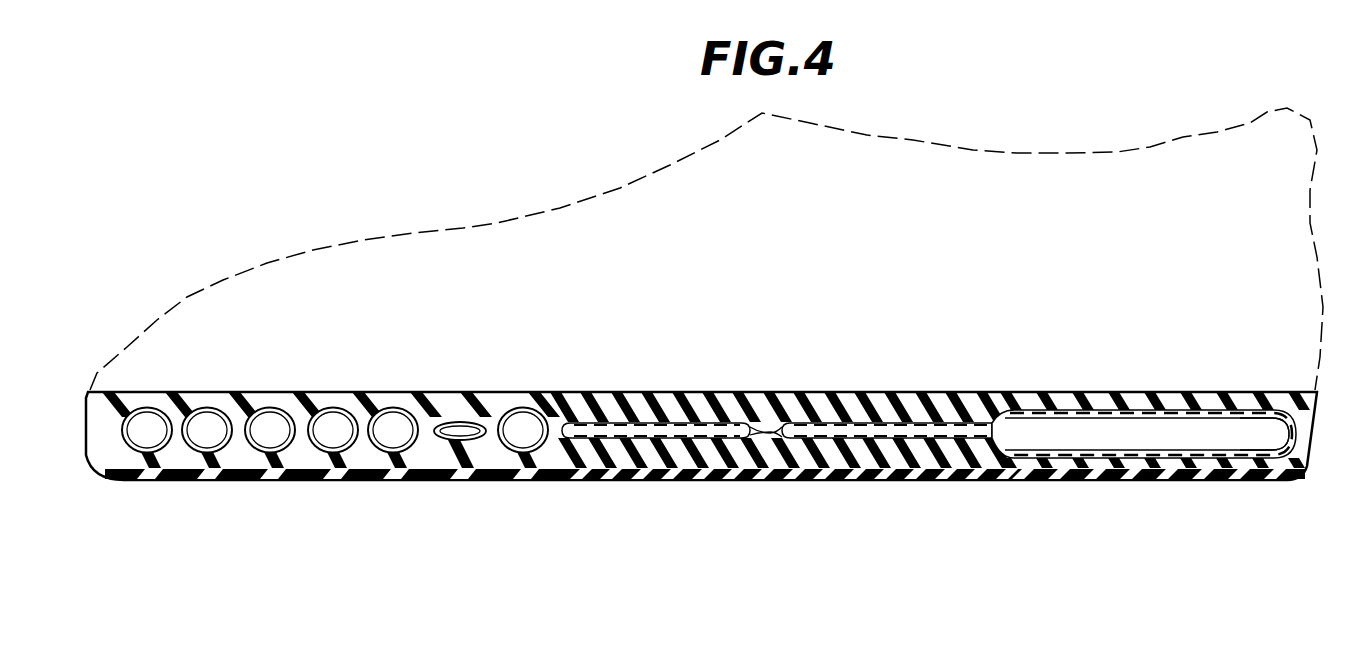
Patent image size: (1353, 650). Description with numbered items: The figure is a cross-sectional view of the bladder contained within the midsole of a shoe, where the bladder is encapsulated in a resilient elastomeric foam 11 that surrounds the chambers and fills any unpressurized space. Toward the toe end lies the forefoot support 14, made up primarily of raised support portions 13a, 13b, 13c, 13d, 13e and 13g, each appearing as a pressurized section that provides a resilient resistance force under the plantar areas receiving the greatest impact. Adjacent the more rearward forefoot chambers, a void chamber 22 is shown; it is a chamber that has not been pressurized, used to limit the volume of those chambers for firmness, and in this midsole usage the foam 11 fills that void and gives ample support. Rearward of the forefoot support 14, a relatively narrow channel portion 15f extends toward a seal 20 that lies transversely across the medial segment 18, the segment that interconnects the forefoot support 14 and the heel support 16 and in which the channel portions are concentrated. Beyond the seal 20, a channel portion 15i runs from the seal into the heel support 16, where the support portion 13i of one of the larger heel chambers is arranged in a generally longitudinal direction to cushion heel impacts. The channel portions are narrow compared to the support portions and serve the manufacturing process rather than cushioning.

The elastomeric foam 11 is at (488, 457).
The support portion 13a is at (145, 432).
The support portion 13b is at (203, 432).
The support portion 13c is at (263, 432).
The support portion 13d is at (323, 432).
The support portion 13e is at (393, 432).
The support portion 13g is at (528, 432).
The support portion 13i is at (1242, 435).
The forefoot support 14 is at (338, 450).
The channel portion 15f is at (677, 432).
The channel portion 15i is at (937, 432).
The heel support 16 is at (1136, 455).
The medial segment 18 is at (742, 430).
The seal 20 is at (769, 430).
The void chamber 22 is at (455, 432).